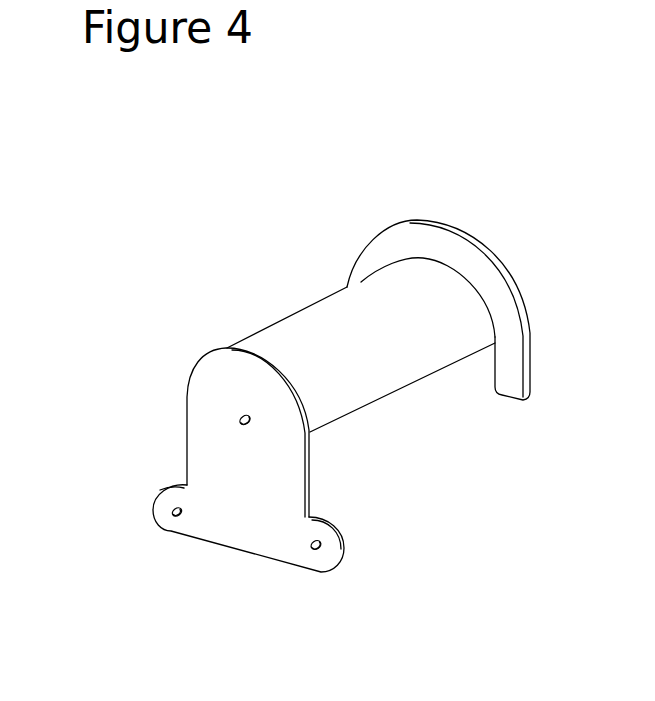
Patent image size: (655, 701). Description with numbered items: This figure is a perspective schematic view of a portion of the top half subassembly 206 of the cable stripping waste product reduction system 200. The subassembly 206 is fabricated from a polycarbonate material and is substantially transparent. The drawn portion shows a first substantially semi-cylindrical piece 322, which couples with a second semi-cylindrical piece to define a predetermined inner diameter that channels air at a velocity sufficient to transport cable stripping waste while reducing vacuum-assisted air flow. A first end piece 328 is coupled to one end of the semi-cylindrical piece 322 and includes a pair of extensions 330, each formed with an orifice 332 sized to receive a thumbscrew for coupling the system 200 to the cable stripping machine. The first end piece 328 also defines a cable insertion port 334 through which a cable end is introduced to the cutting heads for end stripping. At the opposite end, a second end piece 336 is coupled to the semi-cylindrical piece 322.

The cable stripping waste product reduction system 200 is at (472, 148).
The top half subassembly 206 is at (314, 203).
The first substantially semi-cylindrical piece 322 is at (307, 308).
The first end piece 328 is at (222, 432).
The extensions 330 is at (154, 500).
The orifice 332 is at (173, 519).
The cable insertion port 334 is at (240, 415).
The second end piece 336 is at (522, 380).